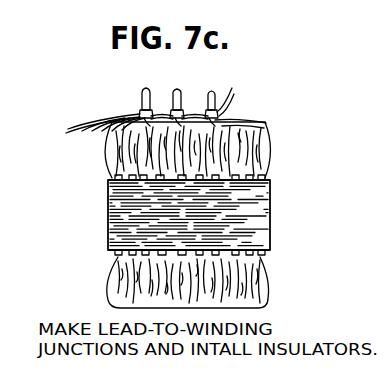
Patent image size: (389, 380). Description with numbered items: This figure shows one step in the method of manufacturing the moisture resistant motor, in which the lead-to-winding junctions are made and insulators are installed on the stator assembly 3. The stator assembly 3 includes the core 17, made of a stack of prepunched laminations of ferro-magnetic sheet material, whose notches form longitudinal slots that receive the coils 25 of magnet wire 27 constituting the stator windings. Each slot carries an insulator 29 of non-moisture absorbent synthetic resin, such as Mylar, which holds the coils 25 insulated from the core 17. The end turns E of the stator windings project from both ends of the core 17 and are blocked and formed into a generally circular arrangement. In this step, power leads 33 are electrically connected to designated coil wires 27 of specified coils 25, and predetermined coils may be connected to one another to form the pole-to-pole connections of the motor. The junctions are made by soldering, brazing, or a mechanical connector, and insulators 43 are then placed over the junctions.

The stator assembly 3 is at (101, 219).
The core 17 is at (273, 217).
The coils 25 is at (297, 107).
The magnet wire 27 is at (235, 97).
The insulator 29 is at (262, 178).
The power leads 33 is at (95, 119).
The insulators 43 is at (134, 99).
The end turns E is at (110, 157).